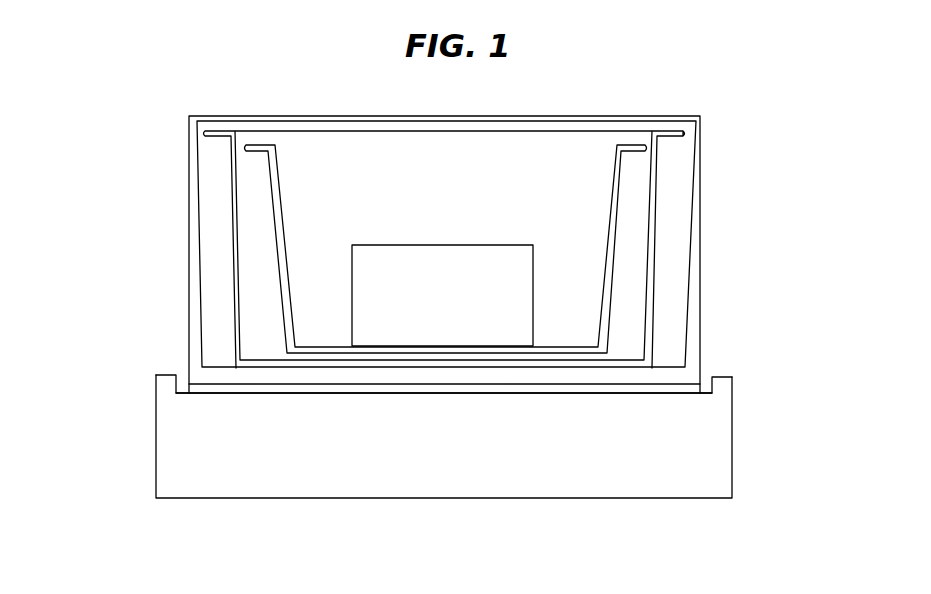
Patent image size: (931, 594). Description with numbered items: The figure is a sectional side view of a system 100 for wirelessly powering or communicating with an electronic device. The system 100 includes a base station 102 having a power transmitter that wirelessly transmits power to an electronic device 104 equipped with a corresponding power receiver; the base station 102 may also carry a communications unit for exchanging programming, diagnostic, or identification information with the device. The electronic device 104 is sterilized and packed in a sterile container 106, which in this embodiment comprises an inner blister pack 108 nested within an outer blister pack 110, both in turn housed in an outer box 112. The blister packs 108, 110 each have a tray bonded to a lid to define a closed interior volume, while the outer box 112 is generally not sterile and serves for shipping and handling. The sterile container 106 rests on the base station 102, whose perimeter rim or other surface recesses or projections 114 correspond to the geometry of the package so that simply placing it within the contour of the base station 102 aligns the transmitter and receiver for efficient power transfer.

The system 100 is at (145, 180).
The base station 102 is at (683, 446).
The electronic device 104 is at (510, 268).
The sterile container 106 is at (715, 130).
The inner blister pack 108 is at (283, 255).
The outer blister pack 110 is at (240, 300).
The outer box 112 is at (695, 293).
The perimeter rim or surface recesses or projections 114 is at (170, 378).